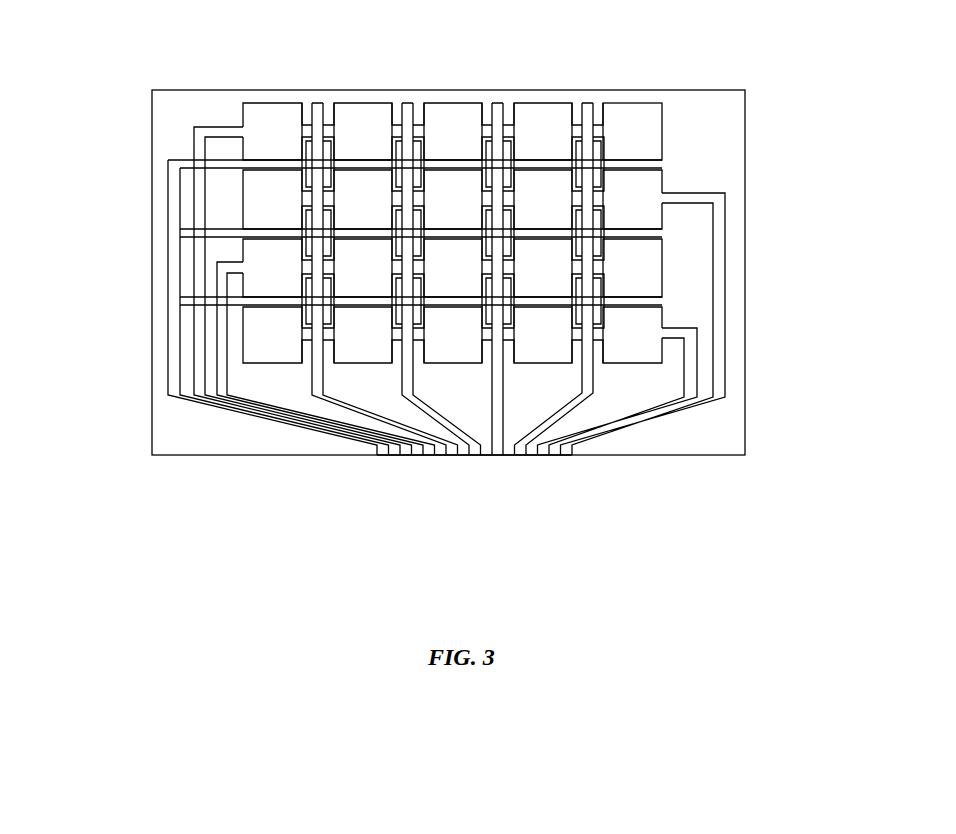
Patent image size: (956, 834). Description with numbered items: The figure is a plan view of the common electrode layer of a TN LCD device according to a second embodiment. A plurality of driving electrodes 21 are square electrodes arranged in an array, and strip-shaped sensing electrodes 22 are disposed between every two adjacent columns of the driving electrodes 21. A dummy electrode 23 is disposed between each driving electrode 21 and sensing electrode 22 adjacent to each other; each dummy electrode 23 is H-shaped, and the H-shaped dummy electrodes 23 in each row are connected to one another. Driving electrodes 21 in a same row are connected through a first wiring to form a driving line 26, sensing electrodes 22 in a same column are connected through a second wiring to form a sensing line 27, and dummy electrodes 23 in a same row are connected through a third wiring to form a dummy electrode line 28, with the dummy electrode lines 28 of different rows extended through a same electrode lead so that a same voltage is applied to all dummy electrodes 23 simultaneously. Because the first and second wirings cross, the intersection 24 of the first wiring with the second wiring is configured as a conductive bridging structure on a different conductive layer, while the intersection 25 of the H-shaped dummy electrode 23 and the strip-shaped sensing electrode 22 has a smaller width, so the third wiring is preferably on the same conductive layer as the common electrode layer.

The driving electrode 21 is at (628, 133).
The strip-shaped sensing electrode 22 is at (590, 100).
The dummy electrode 23 is at (580, 155).
The intersection of the first wiring with the second wiring 24 is at (497, 130).
The intersection of the H-shaped dummy electrode and the strip-shaped sensing electr 25 is at (405, 162).
The driving line 26 is at (695, 197).
The sensing line 27 is at (500, 459).
The dummy electrode line 28 is at (177, 212).